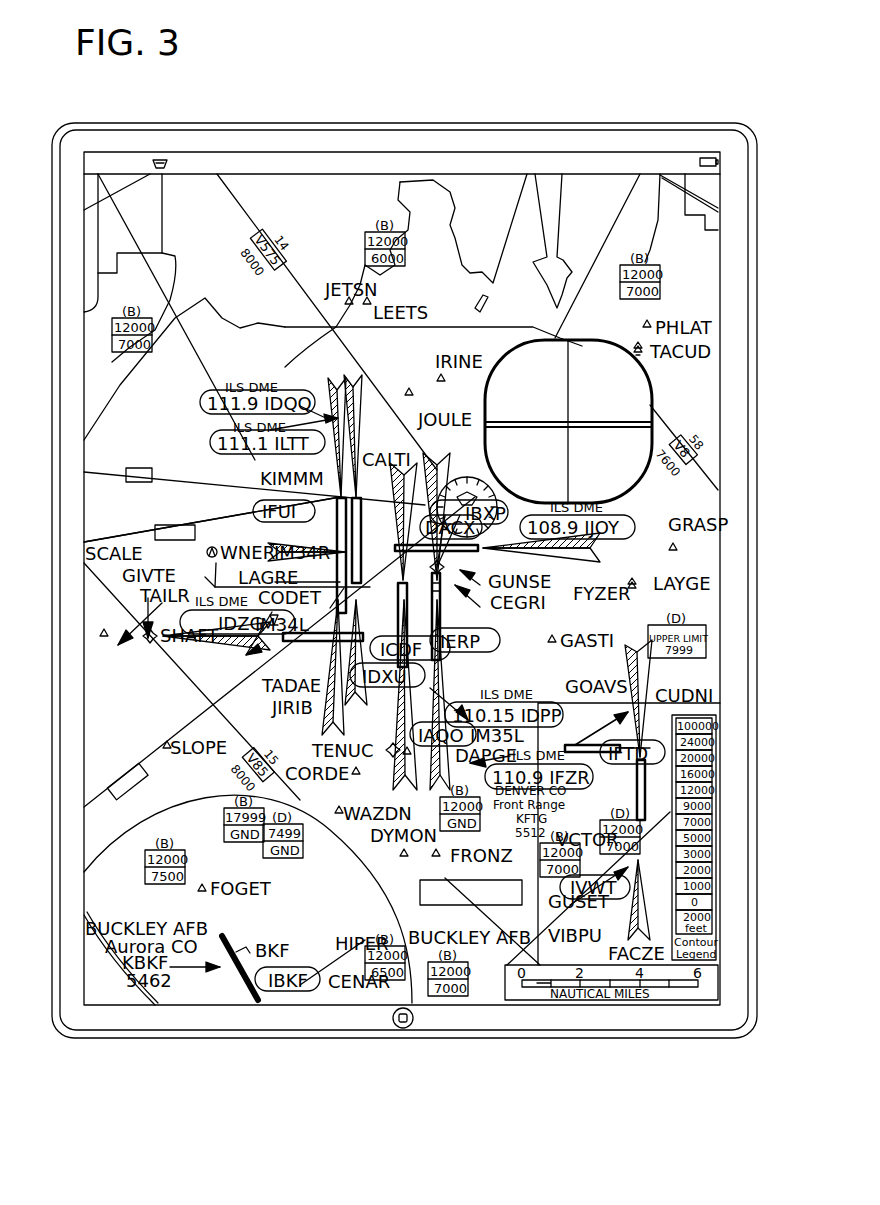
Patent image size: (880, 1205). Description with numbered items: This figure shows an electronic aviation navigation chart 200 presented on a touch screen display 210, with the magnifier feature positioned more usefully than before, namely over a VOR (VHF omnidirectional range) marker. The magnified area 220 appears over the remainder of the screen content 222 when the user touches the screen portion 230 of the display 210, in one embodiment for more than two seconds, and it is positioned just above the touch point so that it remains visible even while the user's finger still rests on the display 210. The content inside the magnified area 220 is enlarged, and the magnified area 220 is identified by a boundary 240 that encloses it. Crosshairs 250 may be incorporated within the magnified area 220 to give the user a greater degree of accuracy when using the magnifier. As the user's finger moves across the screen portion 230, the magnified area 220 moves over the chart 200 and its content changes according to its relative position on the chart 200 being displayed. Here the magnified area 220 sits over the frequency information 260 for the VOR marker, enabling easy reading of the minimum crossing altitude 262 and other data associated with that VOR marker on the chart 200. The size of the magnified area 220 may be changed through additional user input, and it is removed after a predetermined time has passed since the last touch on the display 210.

The navigation chart 200 is at (688, 268).
The display 210 is at (88, 345).
The magnified area 220 is at (648, 380).
The remainder of screen content 222 is at (122, 717).
The screen portion 230 is at (105, 513).
The boundary 240 is at (644, 439).
The crosshairs 250 is at (653, 432).
The frequency information 260 is at (645, 402).
The minimum crossing altitude 262 is at (620, 465).